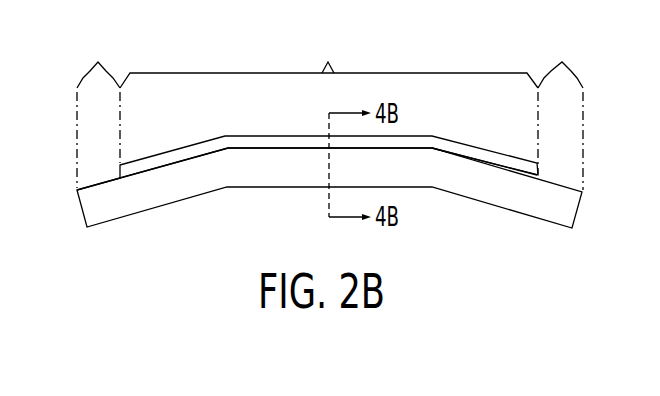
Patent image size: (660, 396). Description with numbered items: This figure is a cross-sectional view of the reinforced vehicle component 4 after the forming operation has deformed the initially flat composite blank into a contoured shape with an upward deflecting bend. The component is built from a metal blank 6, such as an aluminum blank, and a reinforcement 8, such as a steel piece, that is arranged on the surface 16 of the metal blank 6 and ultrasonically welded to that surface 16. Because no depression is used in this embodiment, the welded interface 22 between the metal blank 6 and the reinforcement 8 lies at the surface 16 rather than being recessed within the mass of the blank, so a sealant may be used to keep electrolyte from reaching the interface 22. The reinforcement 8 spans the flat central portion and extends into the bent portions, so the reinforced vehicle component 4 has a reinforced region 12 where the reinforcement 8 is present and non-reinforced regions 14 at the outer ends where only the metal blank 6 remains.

The reinforced vehicle component 4 is at (614, 108).
The metal blank 6 is at (187, 188).
The reinforcement 8 is at (201, 150).
The reinforced region 12 is at (329, 60).
The non-reinforced region 14 is at (330, 111).
The surface 16 is at (106, 177).
The welded interface 22 is at (480, 170).